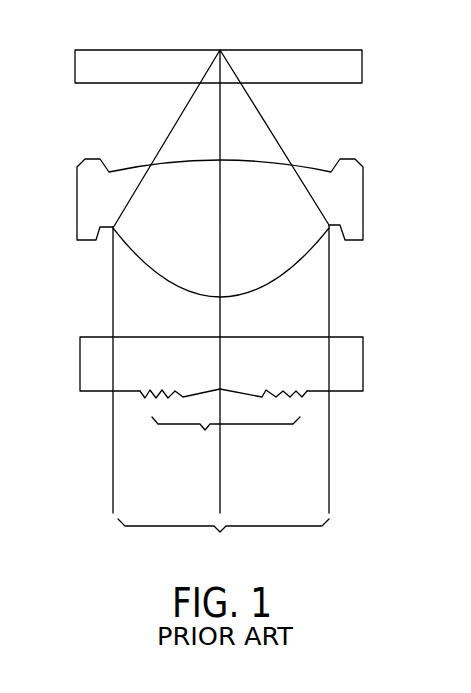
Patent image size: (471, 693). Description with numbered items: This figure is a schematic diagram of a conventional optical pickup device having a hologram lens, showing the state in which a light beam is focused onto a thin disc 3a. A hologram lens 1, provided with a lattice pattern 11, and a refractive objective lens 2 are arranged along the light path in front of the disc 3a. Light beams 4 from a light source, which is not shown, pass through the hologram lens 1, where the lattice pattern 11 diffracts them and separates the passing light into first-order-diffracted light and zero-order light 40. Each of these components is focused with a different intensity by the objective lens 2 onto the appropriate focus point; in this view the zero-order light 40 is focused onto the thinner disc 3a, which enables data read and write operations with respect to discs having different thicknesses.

The disc 3a is at (82, 69).
The refractive objective lens 2 is at (88, 212).
The zero-order light 40 is at (113, 313).
The light beams 4 is at (221, 309).
The hologram lens 1 is at (80, 373).
The lattice pattern 11 is at (223, 426).